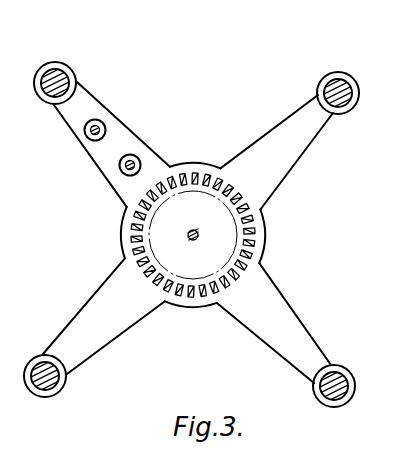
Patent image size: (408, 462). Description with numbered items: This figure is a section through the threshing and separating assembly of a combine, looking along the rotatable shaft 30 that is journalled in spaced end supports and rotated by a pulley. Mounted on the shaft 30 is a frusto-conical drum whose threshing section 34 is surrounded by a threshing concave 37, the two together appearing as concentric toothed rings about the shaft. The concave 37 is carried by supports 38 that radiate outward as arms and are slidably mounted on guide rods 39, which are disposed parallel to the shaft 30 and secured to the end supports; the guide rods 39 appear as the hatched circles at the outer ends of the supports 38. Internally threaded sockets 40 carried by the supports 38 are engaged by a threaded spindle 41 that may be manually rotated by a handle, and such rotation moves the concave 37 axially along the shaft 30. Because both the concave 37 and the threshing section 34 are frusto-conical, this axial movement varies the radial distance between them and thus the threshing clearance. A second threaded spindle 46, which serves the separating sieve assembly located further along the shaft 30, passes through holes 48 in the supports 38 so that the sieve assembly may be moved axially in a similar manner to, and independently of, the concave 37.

The rotatable shaft 30 is at (194, 241).
The threshing section 34 is at (233, 222).
The threshing concave 37 is at (140, 266).
The supports 38 is at (144, 174).
The guide rods 39 is at (75, 80).
The internally threaded sockets 40 is at (134, 155).
The threaded spindle 41 is at (121, 169).
The threaded spindle 46 is at (88, 137).
The holes 48 is at (90, 129).